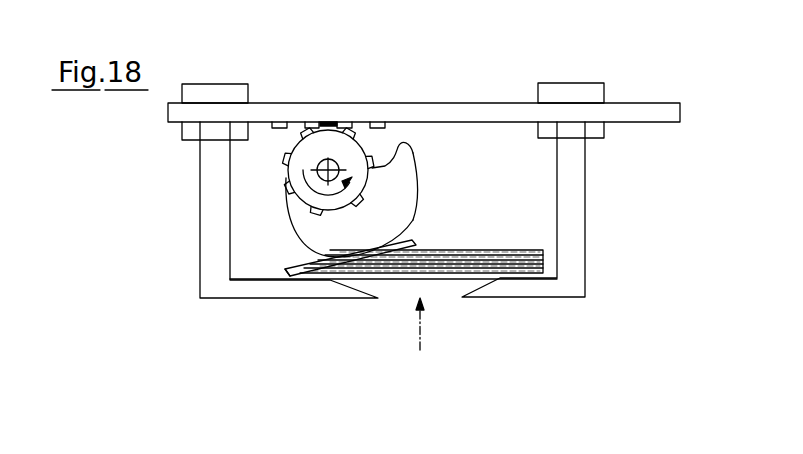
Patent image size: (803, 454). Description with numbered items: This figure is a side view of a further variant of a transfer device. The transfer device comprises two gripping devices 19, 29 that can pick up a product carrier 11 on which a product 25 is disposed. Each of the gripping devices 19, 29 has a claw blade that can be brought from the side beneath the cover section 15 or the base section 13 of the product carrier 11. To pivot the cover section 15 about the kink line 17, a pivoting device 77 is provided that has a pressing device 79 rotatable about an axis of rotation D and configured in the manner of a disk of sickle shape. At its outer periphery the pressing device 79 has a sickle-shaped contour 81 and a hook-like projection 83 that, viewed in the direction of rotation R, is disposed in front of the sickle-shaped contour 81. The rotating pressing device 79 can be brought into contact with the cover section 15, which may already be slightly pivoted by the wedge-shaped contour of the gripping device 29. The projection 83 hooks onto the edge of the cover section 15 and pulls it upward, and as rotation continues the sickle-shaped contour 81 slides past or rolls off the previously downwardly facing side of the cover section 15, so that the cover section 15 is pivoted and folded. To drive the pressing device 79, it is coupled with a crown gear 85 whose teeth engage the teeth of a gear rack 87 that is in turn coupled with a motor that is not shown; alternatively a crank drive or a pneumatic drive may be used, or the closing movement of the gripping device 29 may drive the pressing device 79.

The product carrier 11 is at (423, 337).
The base section 13 is at (440, 280).
The cover section 15 is at (308, 265).
The kink line 17 is at (287, 275).
The gripping device 19 is at (575, 233).
The product 25 is at (505, 263).
The gripping device 29 is at (212, 233).
The pivoting device 77 is at (446, 167).
The pressing device 79 is at (403, 188).
The sickle-shaped contour 81 is at (412, 216).
The hook-like projection 83 is at (405, 155).
The crown gear 85 is at (285, 163).
The gear rack 87 is at (305, 116).
The axis of rotation D is at (330, 166).
The direction of rotation R is at (325, 196).